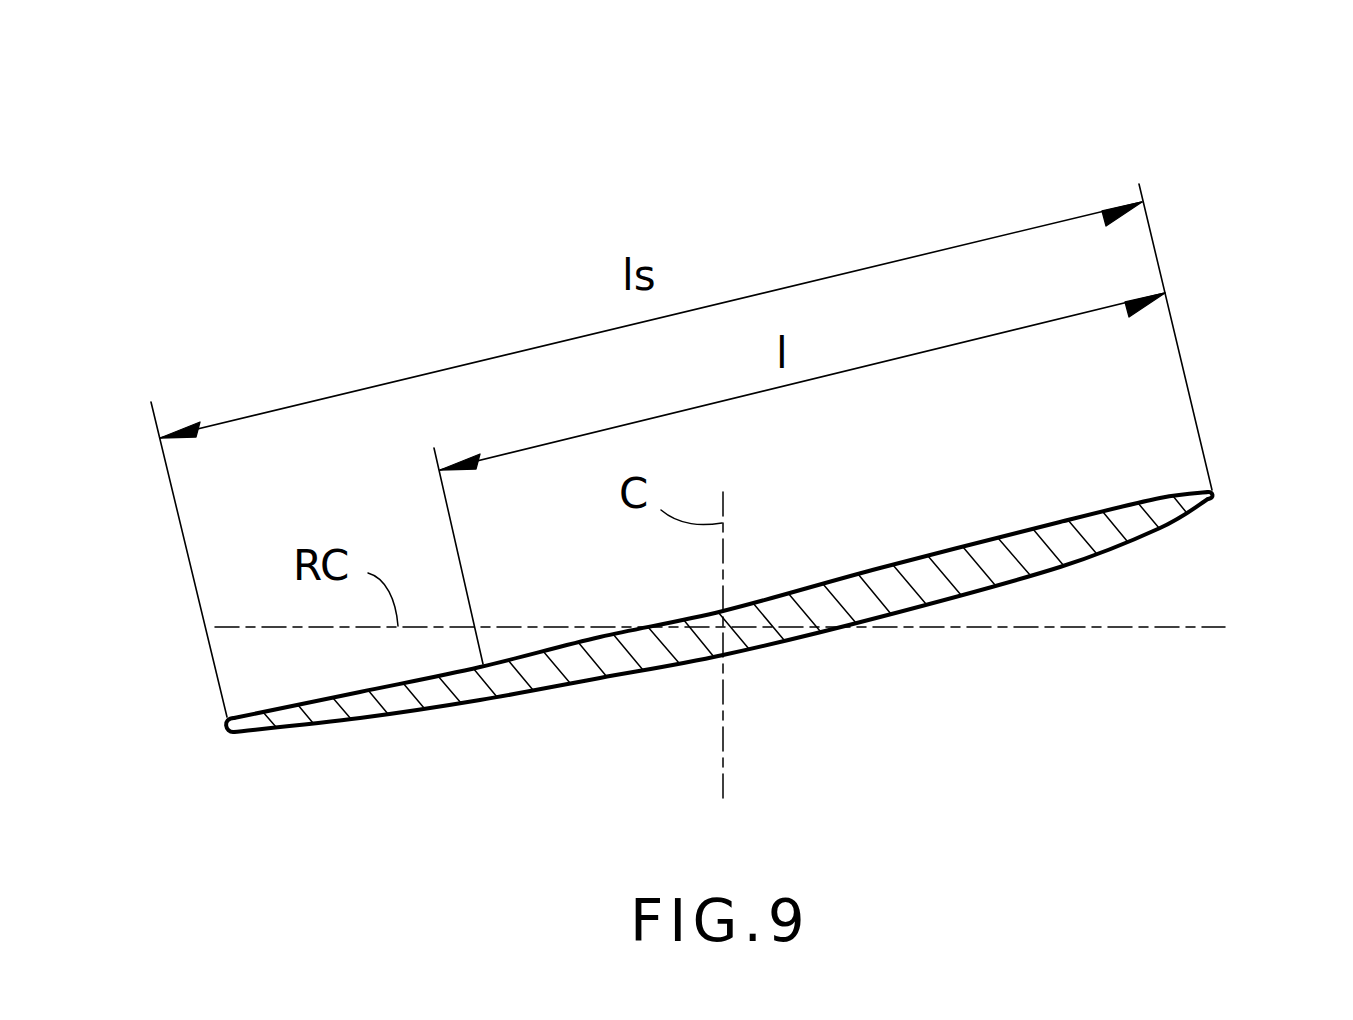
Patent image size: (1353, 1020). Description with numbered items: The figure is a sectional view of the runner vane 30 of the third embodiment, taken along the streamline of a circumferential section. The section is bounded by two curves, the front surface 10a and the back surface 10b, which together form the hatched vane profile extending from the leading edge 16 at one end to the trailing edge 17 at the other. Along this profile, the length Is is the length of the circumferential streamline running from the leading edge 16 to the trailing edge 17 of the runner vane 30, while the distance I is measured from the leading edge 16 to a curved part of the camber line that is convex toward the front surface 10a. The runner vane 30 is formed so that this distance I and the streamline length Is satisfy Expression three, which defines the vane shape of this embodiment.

The runner vane 30 is at (1313, 182).
The front surface 10a is at (872, 571).
The back surface 10b is at (810, 639).
The leading edge 16 is at (1215, 491).
The trailing edge 17 is at (228, 727).